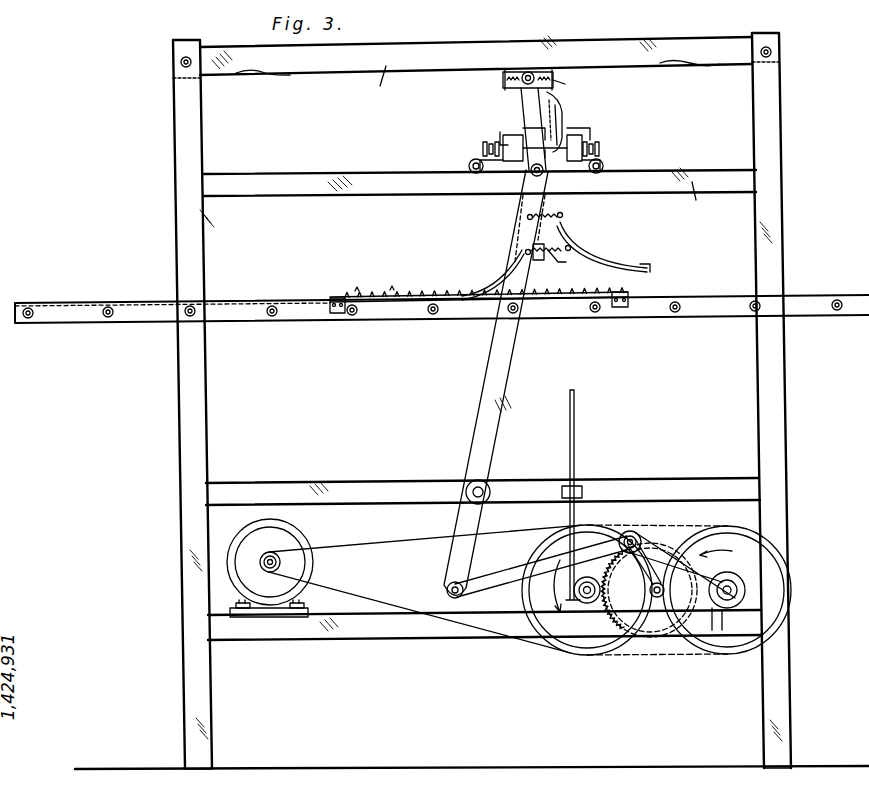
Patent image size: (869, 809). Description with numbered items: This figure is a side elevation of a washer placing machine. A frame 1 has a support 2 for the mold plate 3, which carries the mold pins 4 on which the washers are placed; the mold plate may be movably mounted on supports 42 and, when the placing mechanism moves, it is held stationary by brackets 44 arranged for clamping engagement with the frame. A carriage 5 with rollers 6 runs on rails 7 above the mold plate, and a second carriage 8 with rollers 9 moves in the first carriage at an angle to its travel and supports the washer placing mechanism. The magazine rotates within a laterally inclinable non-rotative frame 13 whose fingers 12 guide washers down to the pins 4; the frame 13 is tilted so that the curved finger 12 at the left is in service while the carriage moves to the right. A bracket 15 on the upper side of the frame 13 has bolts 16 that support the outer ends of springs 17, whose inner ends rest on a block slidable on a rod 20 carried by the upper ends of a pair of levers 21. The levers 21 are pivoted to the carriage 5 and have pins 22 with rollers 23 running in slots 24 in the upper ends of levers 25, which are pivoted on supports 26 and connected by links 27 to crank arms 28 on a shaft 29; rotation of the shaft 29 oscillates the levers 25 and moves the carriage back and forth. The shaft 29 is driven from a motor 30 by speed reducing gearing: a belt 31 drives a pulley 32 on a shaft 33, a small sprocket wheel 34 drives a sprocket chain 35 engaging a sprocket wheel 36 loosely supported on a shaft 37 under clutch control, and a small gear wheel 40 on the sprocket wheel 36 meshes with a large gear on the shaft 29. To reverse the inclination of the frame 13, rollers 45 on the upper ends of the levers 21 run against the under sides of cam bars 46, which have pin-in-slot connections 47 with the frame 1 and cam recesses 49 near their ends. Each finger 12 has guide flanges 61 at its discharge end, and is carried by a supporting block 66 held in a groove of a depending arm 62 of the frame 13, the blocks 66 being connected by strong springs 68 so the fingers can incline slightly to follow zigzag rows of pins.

The frame 1 is at (190, 127).
The support 2 is at (412, 322).
The mold plate 3 is at (440, 292).
The mold pins 4 is at (392, 290).
The carriage 5 is at (495, 172).
The rollers 6 is at (603, 165).
The rails 7 is at (695, 201).
The carriage 8 is at (500, 137).
The rollers 9 is at (482, 149).
The fingers 12 is at (503, 280).
The non-rotative frame 13 is at (512, 94).
The bracket 15 is at (560, 84).
The bolts 16 is at (504, 76).
The springs 17 is at (514, 77).
The rod 20 is at (562, 102).
The levers 21 is at (528, 108).
The pins 22 is at (546, 176).
The rollers 23 is at (530, 196).
The slots 24 is at (556, 120).
The levers 25 is at (500, 364).
The supports 26 is at (472, 488).
The links 27 is at (515, 577).
The crank arms 28 is at (640, 546).
The shaft 29 is at (657, 598).
The motor 30 is at (250, 575).
The belt 31 is at (398, 606).
The pulley 32 is at (745, 548).
The shaft 33 is at (745, 588).
The sprocket wheel 34 is at (716, 632).
The sprocket chain 35 is at (622, 650).
The sprocket wheel 36 is at (592, 648).
The shaft 37 is at (580, 598).
The gear wheel 40 is at (590, 601).
The supports 42 is at (663, 314).
The brackets 44 is at (336, 298).
The rollers 45 is at (531, 73).
The cam bars 46 is at (374, 85).
The pin-in-slot connections 47 is at (181, 62).
The cam recesses 49 is at (252, 76).
The guide flanges 61 is at (650, 274).
The depending arms 62 is at (548, 266).
The supporting block 66 is at (585, 252).
The springs 68 is at (562, 236).